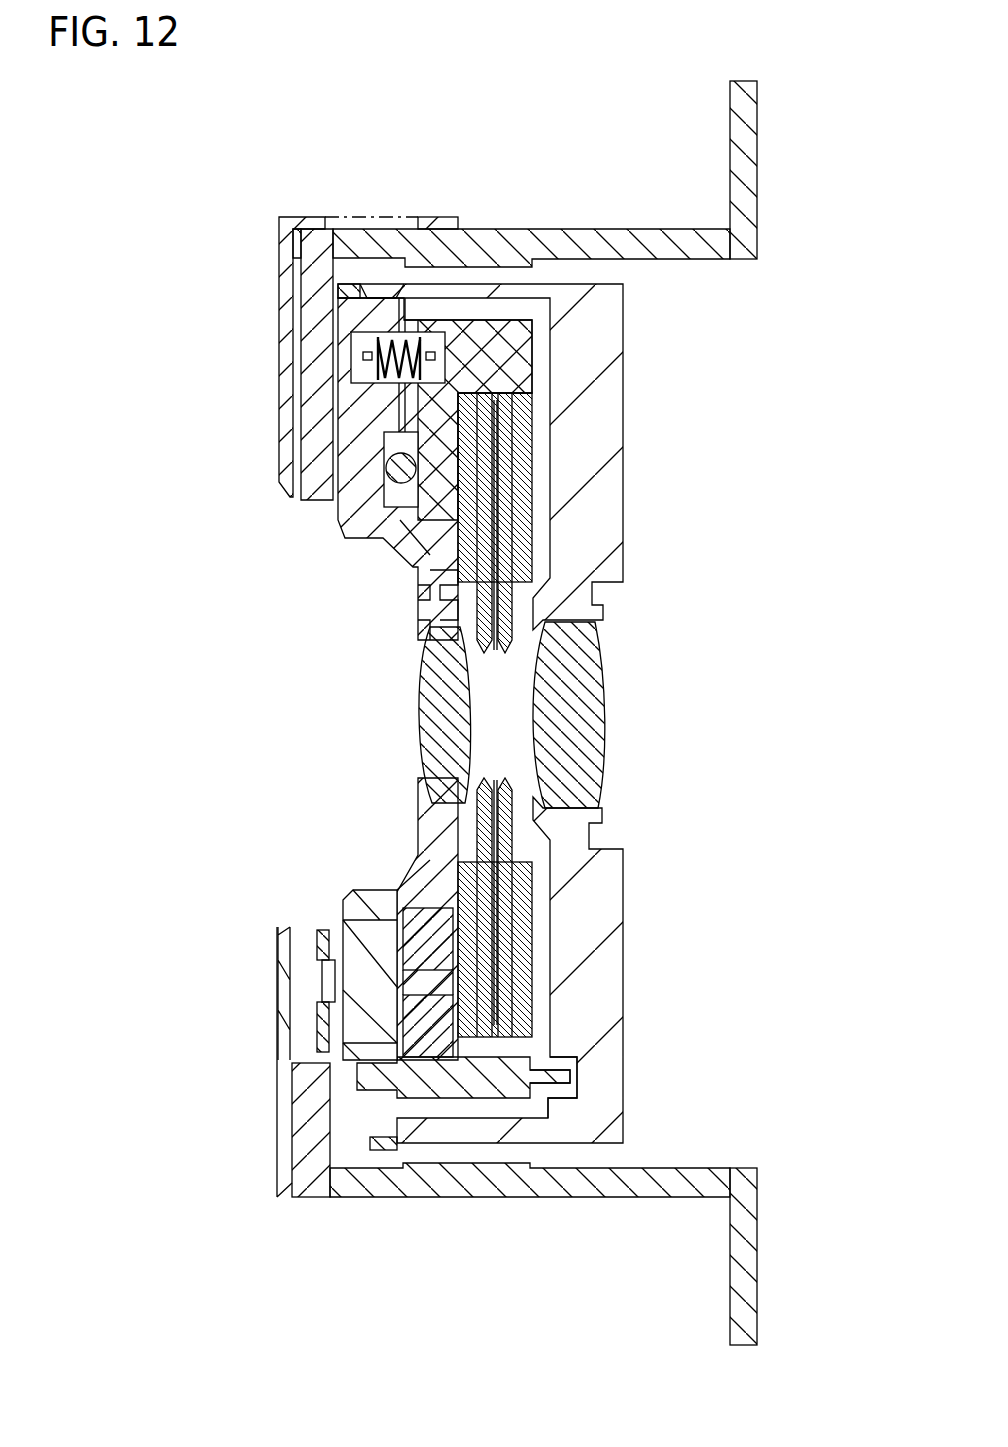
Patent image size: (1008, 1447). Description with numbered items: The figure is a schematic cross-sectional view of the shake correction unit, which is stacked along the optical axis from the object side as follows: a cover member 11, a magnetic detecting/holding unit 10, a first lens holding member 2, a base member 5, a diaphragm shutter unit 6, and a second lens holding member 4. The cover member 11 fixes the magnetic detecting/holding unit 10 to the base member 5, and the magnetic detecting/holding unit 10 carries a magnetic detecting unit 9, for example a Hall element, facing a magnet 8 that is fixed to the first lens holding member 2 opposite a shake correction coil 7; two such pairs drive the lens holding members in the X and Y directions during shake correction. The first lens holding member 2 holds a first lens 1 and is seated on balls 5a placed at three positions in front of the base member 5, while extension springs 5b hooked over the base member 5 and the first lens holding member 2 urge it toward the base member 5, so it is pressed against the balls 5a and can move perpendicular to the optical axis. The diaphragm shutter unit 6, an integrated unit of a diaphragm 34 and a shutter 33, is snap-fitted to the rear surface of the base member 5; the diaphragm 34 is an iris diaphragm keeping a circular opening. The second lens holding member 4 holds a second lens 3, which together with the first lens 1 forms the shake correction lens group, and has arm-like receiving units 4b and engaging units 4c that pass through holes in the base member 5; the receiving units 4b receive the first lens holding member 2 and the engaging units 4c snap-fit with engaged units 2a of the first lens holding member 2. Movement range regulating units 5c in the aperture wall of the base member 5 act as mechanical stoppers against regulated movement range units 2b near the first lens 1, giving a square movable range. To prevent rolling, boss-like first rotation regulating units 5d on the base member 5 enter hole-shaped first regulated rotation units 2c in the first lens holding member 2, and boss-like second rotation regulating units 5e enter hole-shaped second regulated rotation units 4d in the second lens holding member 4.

The first lens 1 is at (428, 722).
The first lens holding member 2 is at (340, 538).
The engaged unit 2a is at (372, 297).
The regulated movement range unit 2b is at (415, 600).
The first regulated rotation unit 2c is at (303, 1183).
The second lens 3 is at (578, 727).
The second lens holding member 4 is at (610, 322).
The receiving unit 4b is at (383, 1150).
The engaging unit 4c is at (385, 283).
The second regulated rotation unit 4d is at (562, 1098).
The base member 5 is at (538, 229).
The ball 5a is at (392, 462).
The extension spring 5b is at (417, 347).
The movement range regulating unit 5c is at (407, 570).
The first rotation regulating unit 5d is at (380, 1085).
The second rotation regulating unit 5e is at (545, 1085).
The diaphragm shutter unit 6 is at (530, 428).
The shake correction coil 7 is at (413, 917).
The magnet 8 is at (355, 935).
The magnetic detecting unit 9 is at (325, 977).
The magnetic detecting/holding unit 10 is at (322, 492).
The cover member 11 is at (285, 235).
The shutter 33 is at (515, 490).
The diaphragm 34 is at (498, 545).